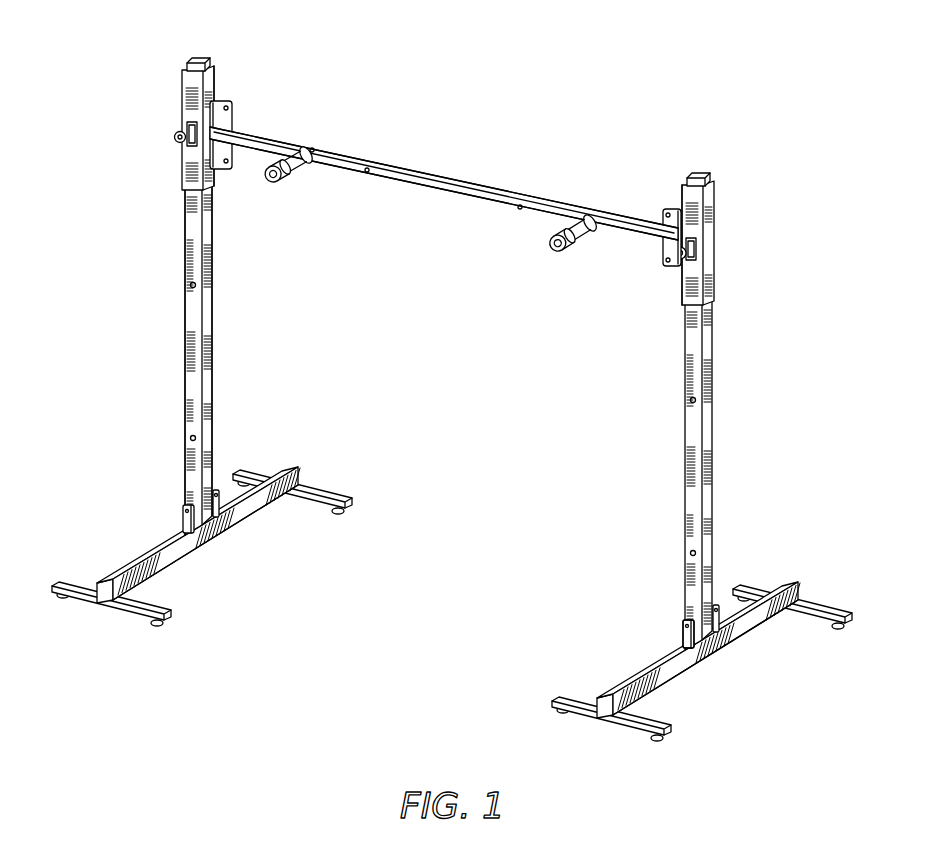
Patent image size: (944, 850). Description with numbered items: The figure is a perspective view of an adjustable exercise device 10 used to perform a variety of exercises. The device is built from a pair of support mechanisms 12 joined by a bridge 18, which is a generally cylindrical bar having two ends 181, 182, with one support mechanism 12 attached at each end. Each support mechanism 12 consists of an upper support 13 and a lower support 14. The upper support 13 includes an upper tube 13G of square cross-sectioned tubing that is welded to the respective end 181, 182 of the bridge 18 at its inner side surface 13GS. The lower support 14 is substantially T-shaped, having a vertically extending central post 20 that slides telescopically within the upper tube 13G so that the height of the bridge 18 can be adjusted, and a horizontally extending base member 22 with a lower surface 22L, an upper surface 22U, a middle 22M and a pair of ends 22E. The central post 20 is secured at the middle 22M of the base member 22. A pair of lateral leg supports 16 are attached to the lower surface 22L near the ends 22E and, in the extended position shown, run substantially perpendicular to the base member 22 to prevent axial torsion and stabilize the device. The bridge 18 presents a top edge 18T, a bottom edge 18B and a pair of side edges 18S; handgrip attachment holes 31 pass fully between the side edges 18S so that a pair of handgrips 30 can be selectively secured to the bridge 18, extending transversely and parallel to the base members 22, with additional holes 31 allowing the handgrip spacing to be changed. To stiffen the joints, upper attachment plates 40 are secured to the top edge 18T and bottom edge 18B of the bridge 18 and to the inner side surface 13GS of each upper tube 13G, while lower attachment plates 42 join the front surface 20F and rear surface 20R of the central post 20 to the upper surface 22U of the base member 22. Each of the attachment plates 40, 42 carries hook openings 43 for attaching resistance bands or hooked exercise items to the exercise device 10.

The adjustable exercise device 10 is at (449, 381).
The support mechanism 12 is at (449, 380).
The upper support 13 is at (454, 164).
The upper tube 13G is at (742, 255).
The inner side surface 13GS is at (213, 78).
The lower support 14 is at (412, 400).
The lateral leg support 16 is at (332, 490).
The bridge 18 is at (457, 155).
The top edge 18T is at (342, 150).
The bottom edge 18B is at (392, 182).
The side edge 18S is at (620, 230).
The end of bridge 181 is at (197, 150).
The end of bridge 182 is at (674, 230).
The central post 20 is at (412, 400).
The front surface 20F is at (185, 262).
The rear surface 20R is at (213, 320).
The base member 22 is at (423, 561).
The end of base member 22E is at (291, 466).
The upper surface 22U is at (297, 462).
The middle of base member 22M is at (208, 548).
The lower surface 22L is at (170, 573).
The handgrip 30 is at (278, 180).
The handgrip attachment hole 31 is at (312, 147).
The upper attachment plate 40 is at (232, 118).
The lower attachment plate 42 is at (217, 492).
The hook opening 43 is at (226, 104).